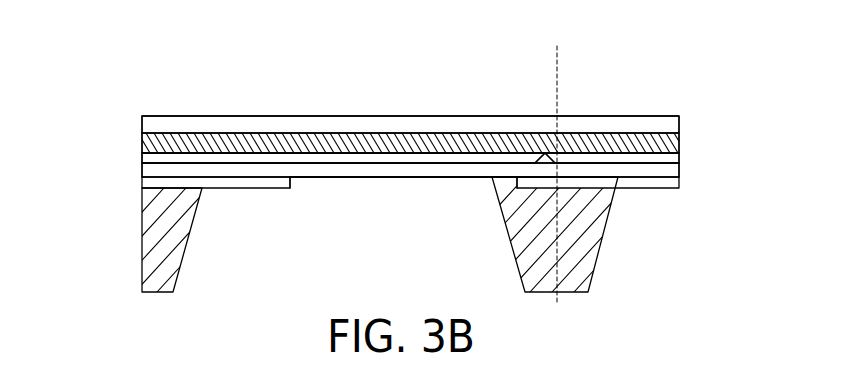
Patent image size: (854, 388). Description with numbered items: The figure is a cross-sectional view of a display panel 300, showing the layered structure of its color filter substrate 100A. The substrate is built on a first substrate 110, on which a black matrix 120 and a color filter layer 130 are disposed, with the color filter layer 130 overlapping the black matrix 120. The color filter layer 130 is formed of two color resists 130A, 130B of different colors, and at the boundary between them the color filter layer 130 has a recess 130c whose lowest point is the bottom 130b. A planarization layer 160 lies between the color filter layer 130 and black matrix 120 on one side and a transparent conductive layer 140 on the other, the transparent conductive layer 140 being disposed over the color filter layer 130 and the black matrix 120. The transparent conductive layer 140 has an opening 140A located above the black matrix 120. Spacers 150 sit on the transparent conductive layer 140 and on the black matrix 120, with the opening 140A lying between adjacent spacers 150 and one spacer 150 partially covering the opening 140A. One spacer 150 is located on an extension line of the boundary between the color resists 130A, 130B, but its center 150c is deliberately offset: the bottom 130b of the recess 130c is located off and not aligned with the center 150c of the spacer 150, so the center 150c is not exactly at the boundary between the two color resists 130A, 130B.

The display panel 300 is at (46, 68).
The color filter substrate 100A is at (658, 97).
The first substrate 110 is at (681, 127).
The black matrix 120 is at (681, 144).
The color filter layer 130 is at (410, 115).
The color resist 130A is at (388, 152).
The color resist 130B is at (620, 158).
The bottom of the recess 130b is at (545, 153).
The recess 130c is at (546, 178).
The transparent conductive layer 140 is at (670, 182).
The opening 140A is at (389, 196).
The spacer 150 is at (594, 217).
The center of the spacer 150c is at (561, 58).
The planarization layer 160 is at (670, 172).